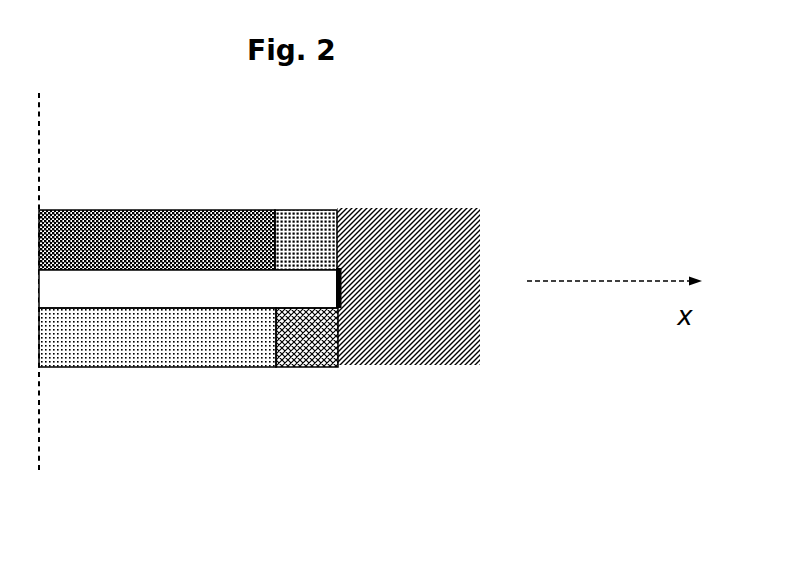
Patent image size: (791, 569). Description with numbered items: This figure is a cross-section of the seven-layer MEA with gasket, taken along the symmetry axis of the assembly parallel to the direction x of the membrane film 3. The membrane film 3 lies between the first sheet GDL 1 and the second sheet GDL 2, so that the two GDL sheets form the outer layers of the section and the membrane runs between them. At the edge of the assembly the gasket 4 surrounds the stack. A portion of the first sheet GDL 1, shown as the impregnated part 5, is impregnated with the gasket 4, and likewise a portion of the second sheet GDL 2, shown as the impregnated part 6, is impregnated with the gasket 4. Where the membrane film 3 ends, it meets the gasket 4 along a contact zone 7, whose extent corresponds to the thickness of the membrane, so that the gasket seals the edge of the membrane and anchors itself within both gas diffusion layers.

The first sheet GDL 1 is at (222, 332).
The second sheet GDL 2 is at (240, 237).
The membrane film 3 is at (262, 285).
The gasket 4 is at (427, 295).
The part of the first sheet GDL impregnated with the gasket 5 is at (323, 337).
The part of the second sheet GDL impregnated with the gasket 6 is at (323, 237).
The contact zone between the membrane and the gasket 7 is at (345, 298).